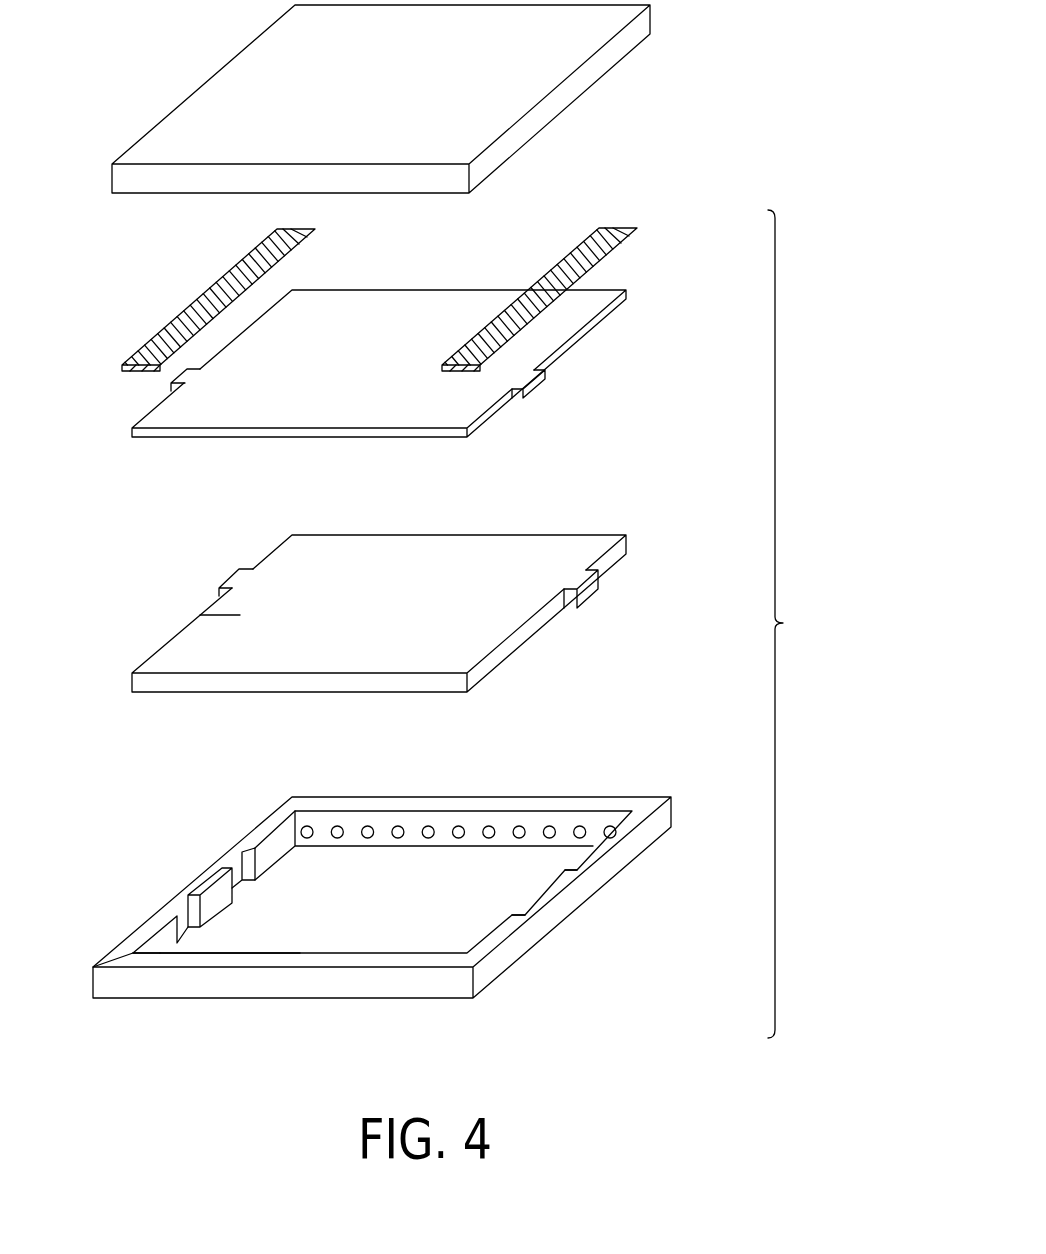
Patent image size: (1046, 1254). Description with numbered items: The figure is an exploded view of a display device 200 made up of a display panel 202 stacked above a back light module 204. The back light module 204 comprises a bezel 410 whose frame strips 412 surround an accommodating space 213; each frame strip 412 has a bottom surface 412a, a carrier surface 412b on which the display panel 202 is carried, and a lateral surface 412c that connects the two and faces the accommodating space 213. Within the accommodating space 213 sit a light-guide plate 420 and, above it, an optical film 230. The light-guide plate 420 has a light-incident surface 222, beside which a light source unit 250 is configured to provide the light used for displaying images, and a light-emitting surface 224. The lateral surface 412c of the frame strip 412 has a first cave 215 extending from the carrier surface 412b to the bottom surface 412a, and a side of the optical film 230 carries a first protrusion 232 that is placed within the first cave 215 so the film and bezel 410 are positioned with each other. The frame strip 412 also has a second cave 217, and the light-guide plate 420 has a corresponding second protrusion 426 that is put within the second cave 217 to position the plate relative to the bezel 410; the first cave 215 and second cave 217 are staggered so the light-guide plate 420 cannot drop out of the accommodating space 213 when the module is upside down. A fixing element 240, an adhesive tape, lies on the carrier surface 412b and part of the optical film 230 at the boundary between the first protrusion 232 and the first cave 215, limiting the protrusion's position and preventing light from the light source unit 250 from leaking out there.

The display device 200 is at (775, 1094).
The display panel 202 is at (650, 21).
The back light module 204 is at (803, 624).
The accommodating space 213 is at (242, 931).
The first cave 215 is at (192, 911).
The second cave 217 is at (244, 858).
The light-incident surface 222 is at (583, 531).
The light-emitting surface 224 is at (222, 628).
The optical film 230 is at (385, 364).
The first protrusion 232 is at (181, 390).
The fixing element 240 is at (218, 288).
The light source unit 250 is at (410, 820).
The bezel 410 is at (409, 894).
The frame strip 412 is at (519, 803).
The bottom surface 412a is at (293, 862).
The carrier surface 412b is at (120, 946).
The lateral surface 412c is at (170, 952).
The light-guide plate 420 is at (410, 610).
The second protrusion 426 is at (237, 572).